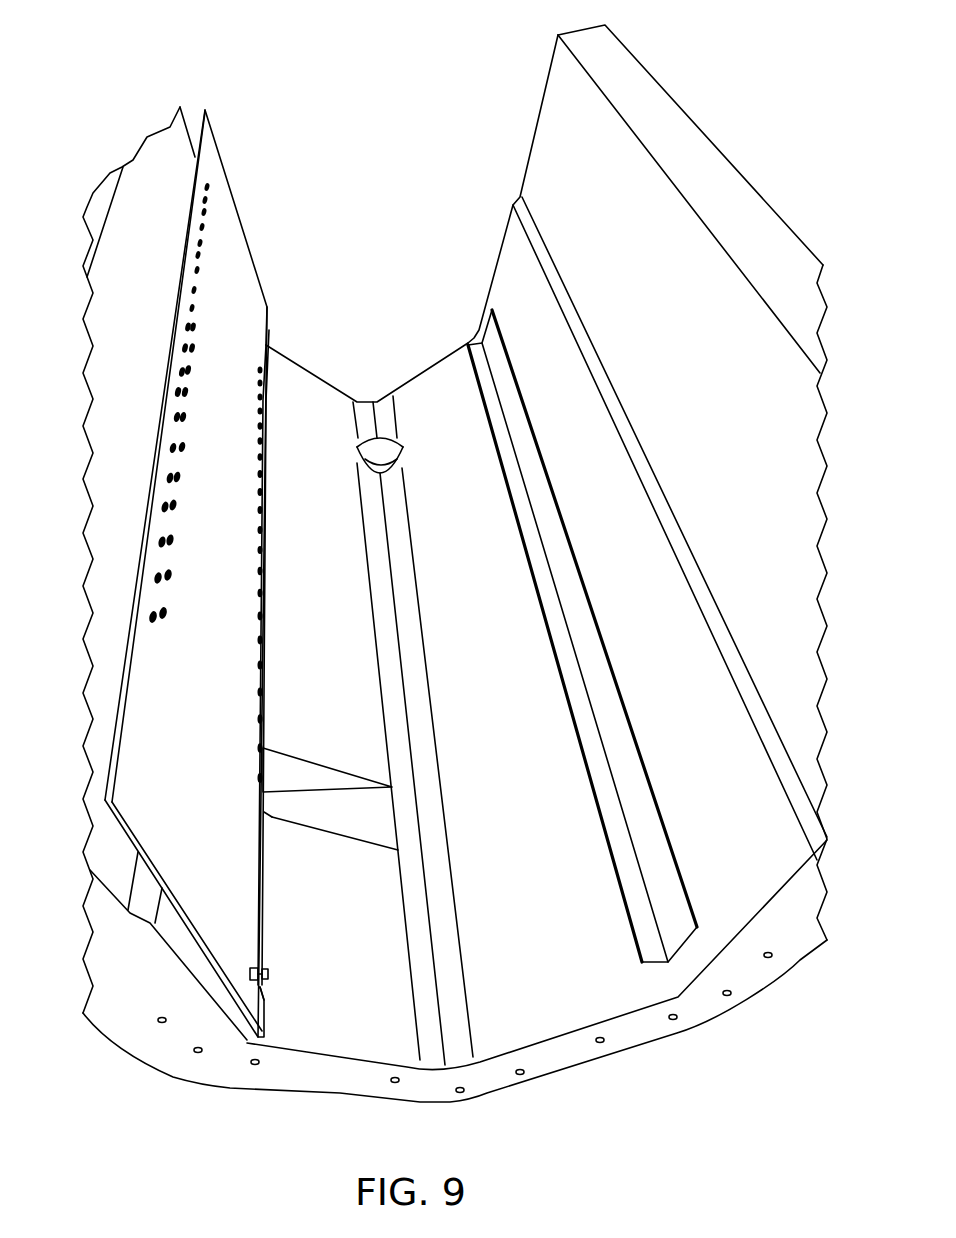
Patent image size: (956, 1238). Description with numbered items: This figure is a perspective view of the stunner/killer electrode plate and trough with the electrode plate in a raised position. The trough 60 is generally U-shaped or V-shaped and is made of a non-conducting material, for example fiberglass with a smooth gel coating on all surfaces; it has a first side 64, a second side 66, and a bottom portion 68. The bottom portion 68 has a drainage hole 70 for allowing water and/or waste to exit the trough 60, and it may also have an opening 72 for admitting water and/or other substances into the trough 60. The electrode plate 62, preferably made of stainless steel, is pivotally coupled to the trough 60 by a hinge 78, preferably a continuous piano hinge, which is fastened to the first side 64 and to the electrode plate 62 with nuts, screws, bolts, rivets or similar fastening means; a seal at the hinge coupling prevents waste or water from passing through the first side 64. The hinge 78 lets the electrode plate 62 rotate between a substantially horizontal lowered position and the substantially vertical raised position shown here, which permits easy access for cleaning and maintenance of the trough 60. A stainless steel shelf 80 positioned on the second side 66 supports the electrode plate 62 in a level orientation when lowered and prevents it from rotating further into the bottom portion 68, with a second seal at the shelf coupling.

The trough 60 is at (672, 222).
The electrode plate 62 is at (145, 693).
The first side 64 is at (138, 433).
The second side 66 is at (665, 532).
The bottom portion 68 is at (447, 977).
The drainage hole 70 is at (393, 452).
The opening 72 is at (288, 802).
The piano hinge 78 is at (270, 973).
The shelf 80 is at (622, 847).